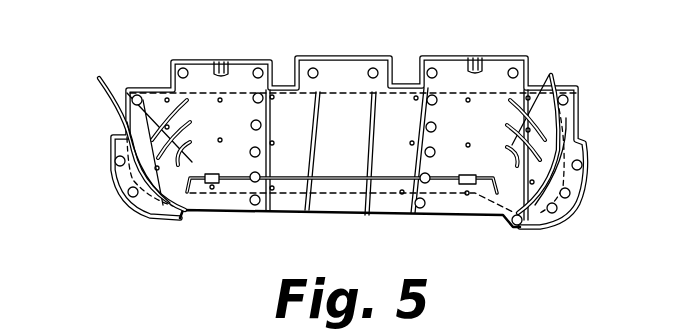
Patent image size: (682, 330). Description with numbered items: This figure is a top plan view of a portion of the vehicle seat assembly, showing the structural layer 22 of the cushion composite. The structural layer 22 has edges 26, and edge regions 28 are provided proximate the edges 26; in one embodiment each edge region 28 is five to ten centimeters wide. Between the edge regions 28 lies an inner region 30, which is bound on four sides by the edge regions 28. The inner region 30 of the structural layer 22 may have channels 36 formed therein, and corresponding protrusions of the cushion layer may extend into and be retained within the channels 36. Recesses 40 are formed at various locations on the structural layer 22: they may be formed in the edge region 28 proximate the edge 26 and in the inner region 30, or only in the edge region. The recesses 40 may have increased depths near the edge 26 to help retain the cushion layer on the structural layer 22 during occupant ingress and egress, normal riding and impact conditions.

The structural layer 22 is at (353, 207).
The edges 26 is at (113, 155).
The edge regions 28 is at (125, 183).
The inner region 30 is at (340, 199).
The channels 36 is at (553, 71).
The recesses 40 is at (256, 93).